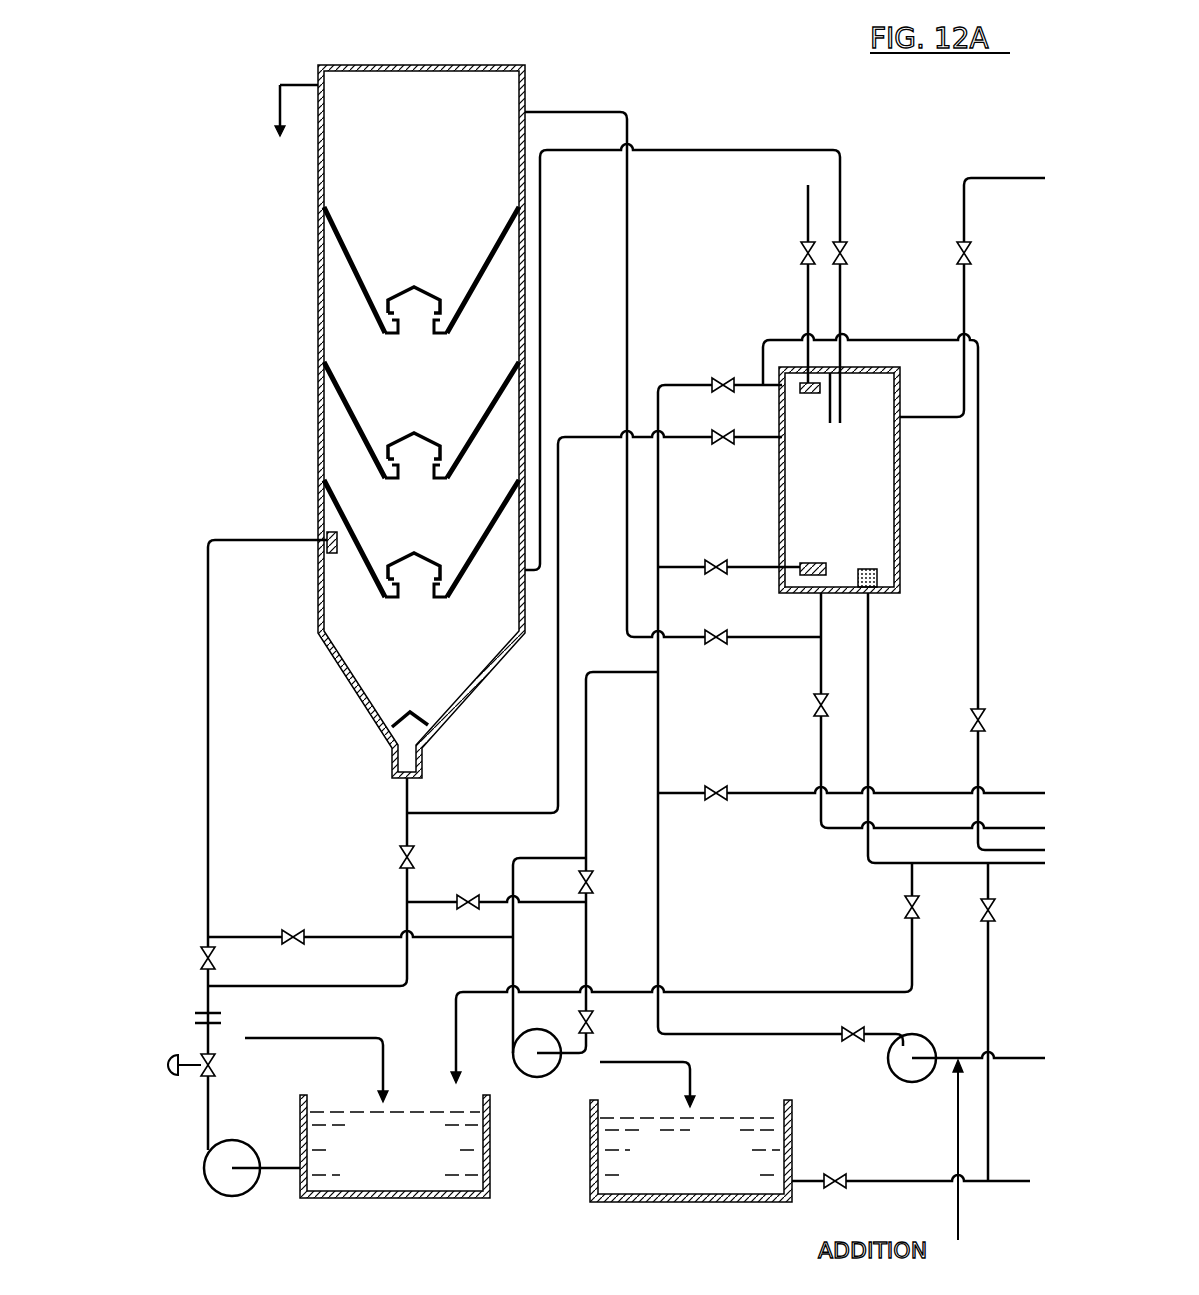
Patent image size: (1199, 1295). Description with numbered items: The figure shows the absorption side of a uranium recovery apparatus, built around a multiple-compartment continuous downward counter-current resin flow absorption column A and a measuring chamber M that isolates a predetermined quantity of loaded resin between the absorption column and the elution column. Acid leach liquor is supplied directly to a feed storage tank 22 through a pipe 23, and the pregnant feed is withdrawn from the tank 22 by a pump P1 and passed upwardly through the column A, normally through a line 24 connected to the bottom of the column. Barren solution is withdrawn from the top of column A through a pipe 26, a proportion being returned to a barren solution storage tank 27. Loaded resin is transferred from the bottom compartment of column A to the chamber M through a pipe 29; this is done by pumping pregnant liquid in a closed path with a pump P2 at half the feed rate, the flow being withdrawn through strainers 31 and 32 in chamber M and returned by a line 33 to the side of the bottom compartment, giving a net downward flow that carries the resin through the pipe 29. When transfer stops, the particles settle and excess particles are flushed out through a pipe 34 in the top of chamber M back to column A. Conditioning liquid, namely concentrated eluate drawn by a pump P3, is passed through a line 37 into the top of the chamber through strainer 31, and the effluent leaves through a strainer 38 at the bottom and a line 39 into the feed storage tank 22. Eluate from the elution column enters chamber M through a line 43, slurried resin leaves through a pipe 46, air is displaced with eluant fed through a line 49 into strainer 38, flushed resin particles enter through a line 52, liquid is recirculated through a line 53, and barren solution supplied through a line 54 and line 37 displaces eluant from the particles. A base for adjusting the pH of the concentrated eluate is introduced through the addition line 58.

The absorption column A is at (318, 330).
The pipe 26 is at (284, 84).
The feed storage tank 22 is at (488, 1162).
The pipe 23 is at (340, 1038).
The line 24 is at (307, 986).
The barren solution storage tank 27 is at (795, 1160).
The pipe 29 is at (557, 770).
The strainer 31 is at (815, 394).
The strainer 32 is at (808, 563).
The line 33 is at (210, 765).
The pipe 34 is at (843, 222).
The line 37 is at (660, 515).
The strainer 38 is at (878, 578).
The line 39 is at (905, 968).
The line 43 is at (978, 602).
The pipe 46 is at (818, 655).
The line 49 is at (945, 865).
The line 52 is at (1010, 178).
The line 53 is at (993, 1008).
The line 54 is at (755, 792).
The addition line 58 is at (957, 1115).
The measuring chamber M is at (900, 492).
The pump P1 is at (238, 1192).
The pump P2 is at (540, 1075).
The pump P3 is at (892, 1074).